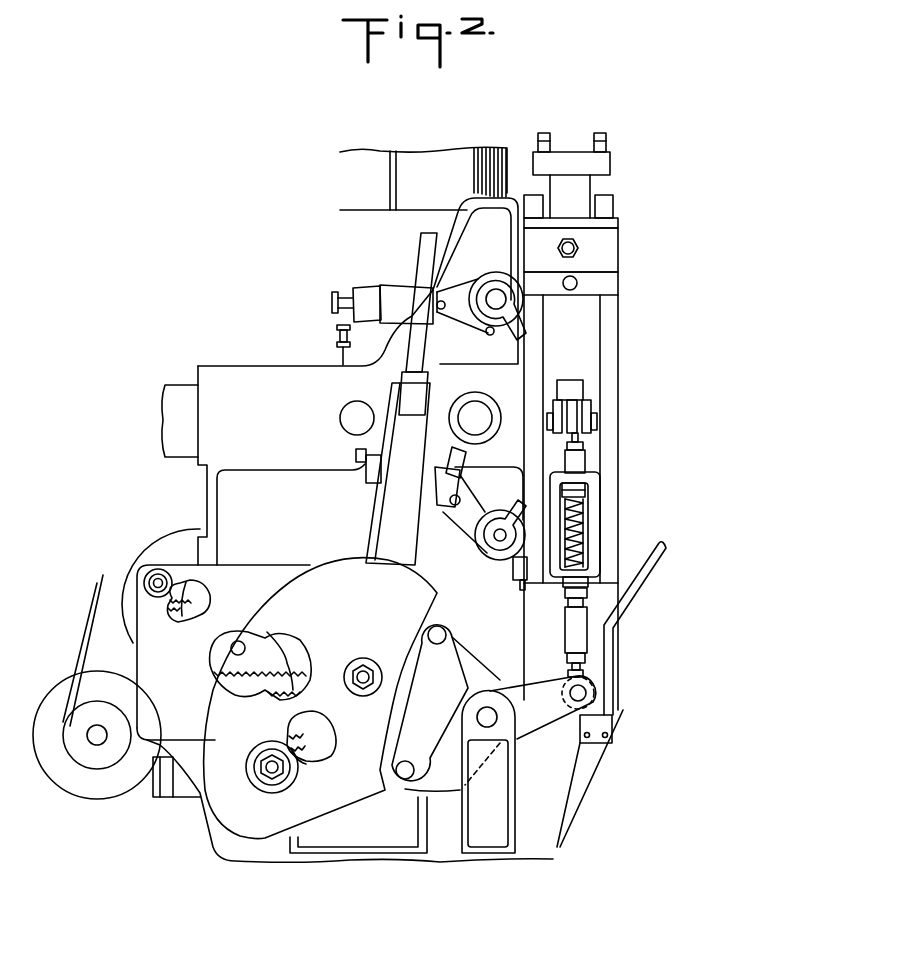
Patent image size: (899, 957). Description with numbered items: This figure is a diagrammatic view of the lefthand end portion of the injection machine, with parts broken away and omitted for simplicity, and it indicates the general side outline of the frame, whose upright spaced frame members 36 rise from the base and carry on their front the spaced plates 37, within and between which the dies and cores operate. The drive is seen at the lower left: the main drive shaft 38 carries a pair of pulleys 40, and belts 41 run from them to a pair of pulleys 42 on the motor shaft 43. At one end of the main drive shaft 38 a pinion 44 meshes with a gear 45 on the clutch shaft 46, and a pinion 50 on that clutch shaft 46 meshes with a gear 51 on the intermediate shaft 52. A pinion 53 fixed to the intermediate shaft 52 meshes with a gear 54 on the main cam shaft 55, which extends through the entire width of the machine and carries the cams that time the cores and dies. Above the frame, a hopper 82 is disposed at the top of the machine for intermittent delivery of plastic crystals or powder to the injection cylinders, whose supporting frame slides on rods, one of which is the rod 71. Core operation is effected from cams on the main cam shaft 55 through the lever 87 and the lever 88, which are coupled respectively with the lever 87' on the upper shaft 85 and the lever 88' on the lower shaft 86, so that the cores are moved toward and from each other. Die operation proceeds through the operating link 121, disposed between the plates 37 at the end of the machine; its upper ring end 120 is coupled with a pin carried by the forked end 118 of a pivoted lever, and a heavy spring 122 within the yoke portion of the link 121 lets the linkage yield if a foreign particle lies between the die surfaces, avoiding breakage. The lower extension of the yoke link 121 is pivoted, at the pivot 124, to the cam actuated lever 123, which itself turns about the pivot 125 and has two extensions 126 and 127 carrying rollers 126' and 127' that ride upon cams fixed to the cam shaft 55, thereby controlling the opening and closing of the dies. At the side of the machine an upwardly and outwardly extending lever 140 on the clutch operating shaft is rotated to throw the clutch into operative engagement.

The upright spaced frame members 36 is at (510, 203).
The spaced plates 37 is at (612, 337).
The main drive shaft 38 is at (157, 577).
The pulleys 40 is at (106, 568).
The belts 41 is at (87, 613).
The pulleys 42 is at (100, 757).
The motor shaft 43 is at (92, 741).
The pinion 44 is at (197, 585).
The gear 45 is at (200, 605).
The clutch shaft 46 is at (238, 641).
The pinion 50 is at (264, 650).
The gear 51 is at (291, 687).
The intermediate shaft 52 is at (272, 770).
The pinion 53 is at (306, 764).
The gear 54 is at (322, 728).
The main cam shaft 55 is at (364, 672).
The rod 71 is at (352, 405).
The hopper 82 is at (455, 157).
The upper shaft 85 is at (496, 296).
The lower shaft 86 is at (500, 537).
The lever 87 is at (400, 399).
The lever 87' is at (465, 296).
The lever 88 is at (443, 500).
The lever 88' is at (489, 493).
The forked end of lever 118 is at (595, 410).
The upper ring end 120 is at (575, 398).
The operating link 121 is at (594, 519).
The heavy spring 122 is at (582, 547).
The cam actuated lever 123 is at (553, 721).
The pivot 124 is at (583, 690).
The pivot 125 is at (496, 722).
The extension 126 is at (471, 797).
The roller 126' is at (428, 755).
The extension 127 is at (456, 691).
The roller 127' is at (431, 665).
The lever 140 is at (663, 549).